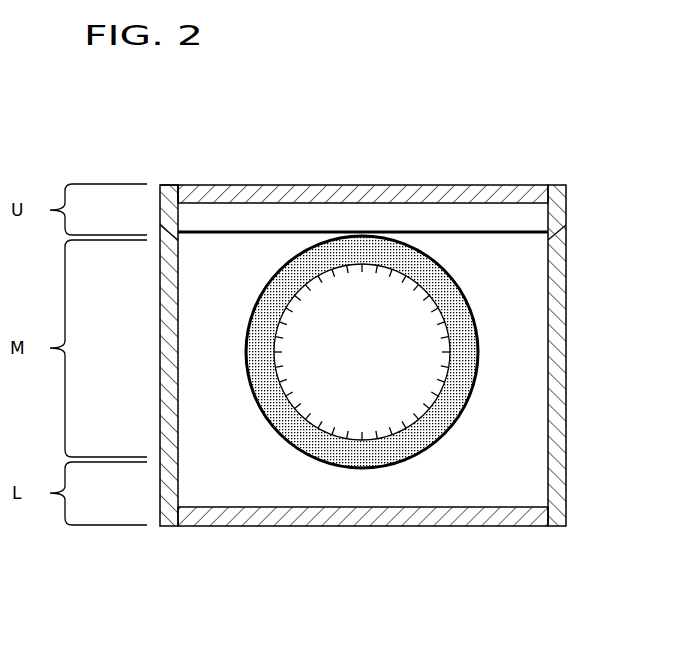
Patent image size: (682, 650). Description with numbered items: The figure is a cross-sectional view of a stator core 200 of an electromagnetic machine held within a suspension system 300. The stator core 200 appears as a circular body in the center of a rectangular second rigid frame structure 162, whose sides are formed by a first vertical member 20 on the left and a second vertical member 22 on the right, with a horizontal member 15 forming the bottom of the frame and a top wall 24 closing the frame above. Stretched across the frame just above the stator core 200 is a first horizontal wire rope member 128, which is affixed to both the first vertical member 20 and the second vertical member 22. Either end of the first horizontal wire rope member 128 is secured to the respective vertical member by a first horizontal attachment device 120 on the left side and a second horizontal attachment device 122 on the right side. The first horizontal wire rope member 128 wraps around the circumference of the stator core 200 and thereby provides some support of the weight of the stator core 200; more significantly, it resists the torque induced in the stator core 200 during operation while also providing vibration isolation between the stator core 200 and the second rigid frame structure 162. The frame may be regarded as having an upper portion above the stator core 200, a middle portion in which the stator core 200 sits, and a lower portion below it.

The suspension system 300 is at (176, 140).
The second rigid frame structure 162 is at (144, 161).
The first horizontal attachment device 120 is at (160, 233).
The second horizontal attachment device 122 is at (567, 233).
The first horizontal wire rope member 128 is at (493, 232).
The top wall 24 is at (327, 193).
The second vertical member 22 is at (567, 390).
The first vertical member 20 is at (162, 392).
The horizontal member 15 is at (288, 524).
The stator core 200 is at (380, 359).